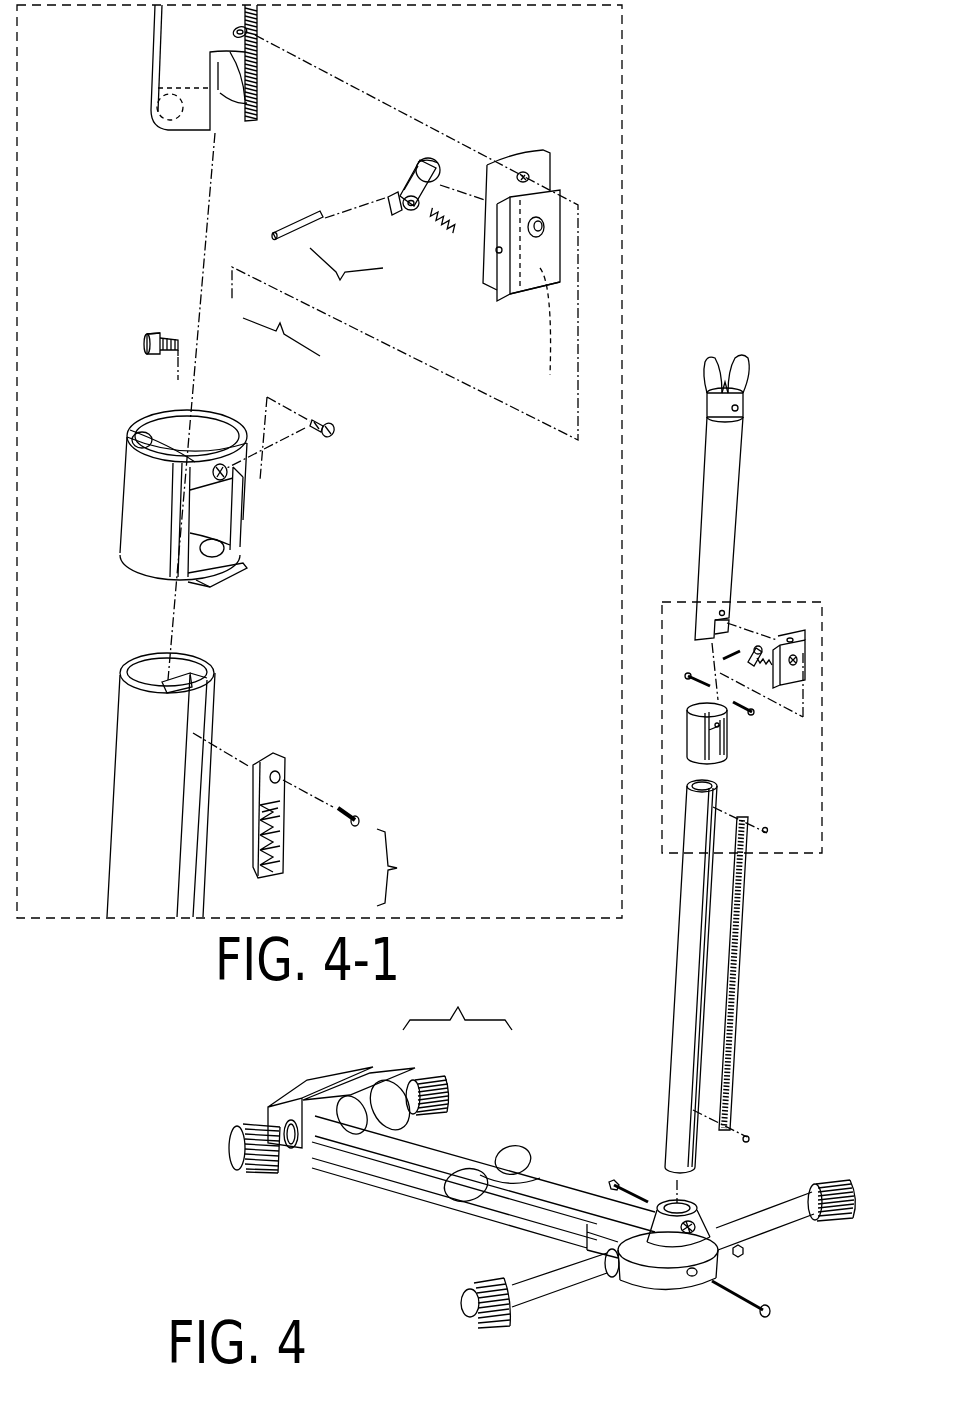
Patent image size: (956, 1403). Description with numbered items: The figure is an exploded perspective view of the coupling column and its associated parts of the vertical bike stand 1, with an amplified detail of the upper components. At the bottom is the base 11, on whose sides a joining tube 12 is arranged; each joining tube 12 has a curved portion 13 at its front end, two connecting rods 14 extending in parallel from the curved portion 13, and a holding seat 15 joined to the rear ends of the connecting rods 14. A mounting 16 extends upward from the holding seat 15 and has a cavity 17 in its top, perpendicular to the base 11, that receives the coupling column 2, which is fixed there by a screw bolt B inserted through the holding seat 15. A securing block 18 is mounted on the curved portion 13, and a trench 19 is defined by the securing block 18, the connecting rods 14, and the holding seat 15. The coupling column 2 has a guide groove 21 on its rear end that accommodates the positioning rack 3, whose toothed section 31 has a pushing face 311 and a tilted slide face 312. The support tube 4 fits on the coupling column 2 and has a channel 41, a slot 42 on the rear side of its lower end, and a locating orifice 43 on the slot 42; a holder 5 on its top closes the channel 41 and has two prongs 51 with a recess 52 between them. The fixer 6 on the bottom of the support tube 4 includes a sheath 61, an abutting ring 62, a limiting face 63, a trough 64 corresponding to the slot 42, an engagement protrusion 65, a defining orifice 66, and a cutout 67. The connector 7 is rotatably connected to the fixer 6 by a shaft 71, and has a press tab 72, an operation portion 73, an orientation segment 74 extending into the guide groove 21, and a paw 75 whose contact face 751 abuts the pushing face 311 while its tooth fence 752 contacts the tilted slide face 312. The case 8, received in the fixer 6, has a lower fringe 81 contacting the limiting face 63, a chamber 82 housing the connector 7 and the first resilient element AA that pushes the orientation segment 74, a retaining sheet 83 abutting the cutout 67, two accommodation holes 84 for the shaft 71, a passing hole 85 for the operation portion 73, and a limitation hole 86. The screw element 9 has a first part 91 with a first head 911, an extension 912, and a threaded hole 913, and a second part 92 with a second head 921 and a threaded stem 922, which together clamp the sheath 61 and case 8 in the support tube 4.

In FIG. 4, the vertical bike stand 1 is at (213, 1110).
In FIG. 4, the base 11 is at (400, 1177).
In FIG. 4, the joining tube 12 is at (457, 999).
In FIG. 4, the curved portion 13 is at (360, 1073).
In FIG. 4, the connecting rods 14 is at (467, 1140).
In FIG. 4, the holding seat 15 is at (638, 1278).
In FIG. 4, the mounting 16 is at (677, 1240).
In FIG. 4, the cavity 17 is at (683, 1200).
In FIG. 4, the securing block 18 is at (277, 1112).
In FIG. 4, the trench 19 is at (545, 1230).
In FIG. 4-1, the coupling column 2 is at (133, 748).
In FIG. 4, the coupling column 2 is at (670, 1080).
In FIG. 4-1, the guide groove 21 is at (193, 712).
In FIG. 4-1, the positioning rack 3 is at (285, 765).
In FIG. 4, the positioning rack 3 is at (745, 985).
In FIG. 4-1, the toothed section 31 is at (403, 867).
In FIG. 4-1, the pushing face 311 is at (283, 840).
In FIG. 4-1, the tilted slide face 312 is at (283, 862).
In FIG. 4-1, the support tube 4 is at (155, 67).
In FIG. 4, the support tube 4 is at (725, 540).
In FIG. 4-1, the channel 41 is at (177, 133).
In FIG. 4-1, the slot 42 is at (250, 62).
In FIG. 4-1, the locating orifice 43 is at (247, 33).
In FIG. 4, the holder 5 is at (745, 405).
In FIG. 4, the prongs 51 is at (705, 375).
In FIG. 4, the recess 52 is at (728, 380).
In FIG. 4-1, the fixer 6 is at (125, 468).
In FIG. 4, the fixer 6 is at (728, 742).
In FIG. 4-1, the sheath 61 is at (127, 433).
In FIG. 4-1, the abutting ring 62 is at (215, 575).
In FIG. 4-1, the limiting face 63 is at (210, 585).
In FIG. 4-1, the trough 64 is at (200, 530).
In FIG. 4-1, the engagement protrusion 65 is at (190, 487).
In FIG. 4-1, the defining orifice 66 is at (223, 477).
In FIG. 4-1, the cutout 67 is at (140, 438).
In FIG. 4-1, the connector 7 is at (392, 200).
In FIG. 4-1, the shaft 71 is at (278, 228).
In FIG. 4-1, the press tab 72 is at (405, 188).
In FIG. 4-1, the operation portion 73 is at (426, 160).
In FIG. 4-1, the orientation segment 74 is at (415, 212).
In FIG. 4-1, the paw 75 is at (343, 276).
In FIG. 4-1, the contact face 751 is at (411, 210).
In FIG. 4-1, the tooth fence 752 is at (387, 200).
In FIG. 4-1, the case 8 is at (565, 245).
In FIG. 4, the case 8 is at (805, 650).
In FIG. 4-1, the lower fringe 81 is at (517, 296).
In FIG. 4-1, the chamber 82 is at (546, 335).
In FIG. 4-1, the retaining sheet 83 is at (516, 160).
In FIG. 4-1, the accommodation holes 84 is at (498, 255).
In FIG. 4-1, the passing hole 85 is at (545, 226).
In FIG. 4-1, the limitation hole 86 is at (530, 177).
In FIG. 4-1, the screw element 9 is at (281, 326).
In FIG. 4-1, the first part 91 is at (180, 343).
In FIG. 4-1, the first head 911 is at (165, 334).
In FIG. 4-1, the extension 912 is at (160, 352).
In FIG. 4-1, the threaded hole 913 is at (171, 381).
In FIG. 4-1, the second part 92 is at (318, 418).
In FIG. 4-1, the second head 921 is at (333, 430).
In FIG. 4-1, the threaded stem 922 is at (312, 428).
In FIG. 4-1, the first resilient element AA is at (445, 238).
In FIG. 4, the screw bolt B is at (636, 1170).